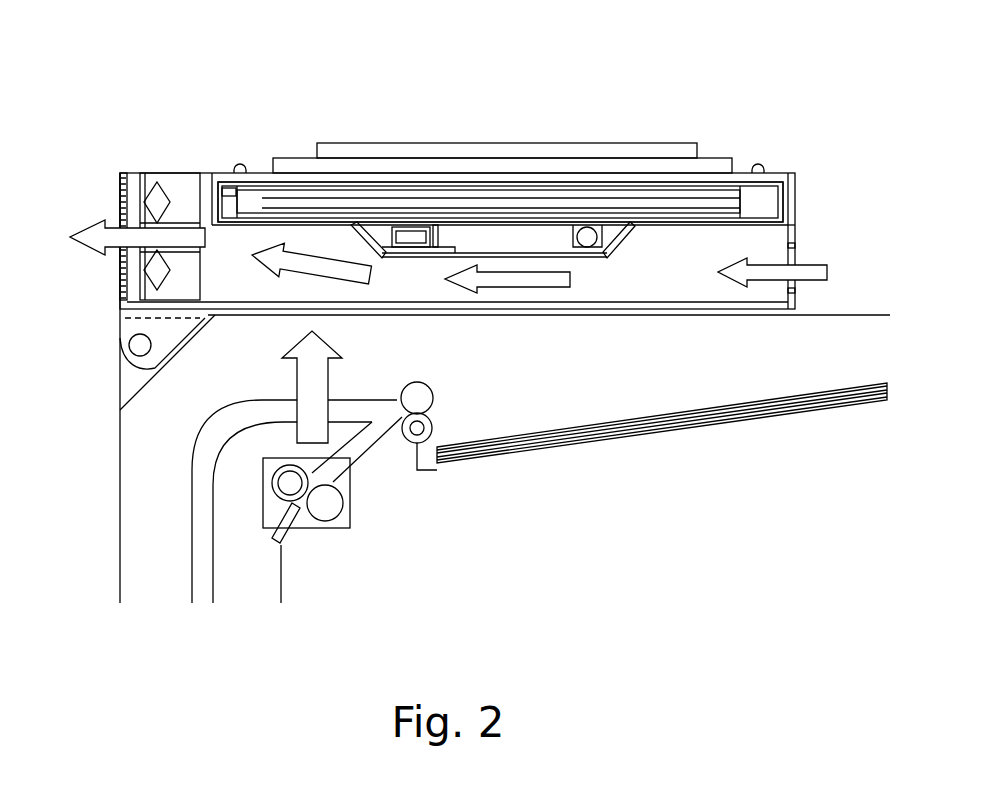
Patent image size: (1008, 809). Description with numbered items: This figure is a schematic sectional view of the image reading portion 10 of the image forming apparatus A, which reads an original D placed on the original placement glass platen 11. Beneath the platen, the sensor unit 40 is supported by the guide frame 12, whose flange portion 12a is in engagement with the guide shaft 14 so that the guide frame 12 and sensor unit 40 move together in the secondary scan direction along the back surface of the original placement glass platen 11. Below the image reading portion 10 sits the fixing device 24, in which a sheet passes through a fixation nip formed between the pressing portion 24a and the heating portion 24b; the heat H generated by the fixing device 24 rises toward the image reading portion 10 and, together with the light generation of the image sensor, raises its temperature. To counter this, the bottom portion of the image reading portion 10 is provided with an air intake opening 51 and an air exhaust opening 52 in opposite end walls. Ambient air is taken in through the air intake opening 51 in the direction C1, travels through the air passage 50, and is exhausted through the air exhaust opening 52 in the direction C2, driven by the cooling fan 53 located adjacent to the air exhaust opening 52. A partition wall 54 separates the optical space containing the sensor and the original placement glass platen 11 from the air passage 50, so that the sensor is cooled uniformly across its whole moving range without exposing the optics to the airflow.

The image reading portion 10 is at (798, 122).
The original placement glass platen 11 is at (540, 167).
The guide frame 12 is at (752, 193).
The flange portion 12a is at (592, 218).
The guide shaft 14 is at (590, 246).
The fixing device 24 is at (322, 530).
The pressing portion 24a is at (288, 483).
The heating portion 24b is at (333, 502).
The sensor unit 40 is at (288, 197).
The air passage 50 is at (663, 287).
The air intake opening 51 is at (792, 290).
The air exhaust opening 52 is at (120, 289).
The cooling fan 53 is at (177, 180).
The partition wall 54 is at (788, 224).
The image forming apparatus A is at (83, 423).
The original D is at (483, 152).
The heat H is at (312, 387).
The air intake direction C1 is at (788, 269).
The air exhaust direction C2 is at (120, 237).